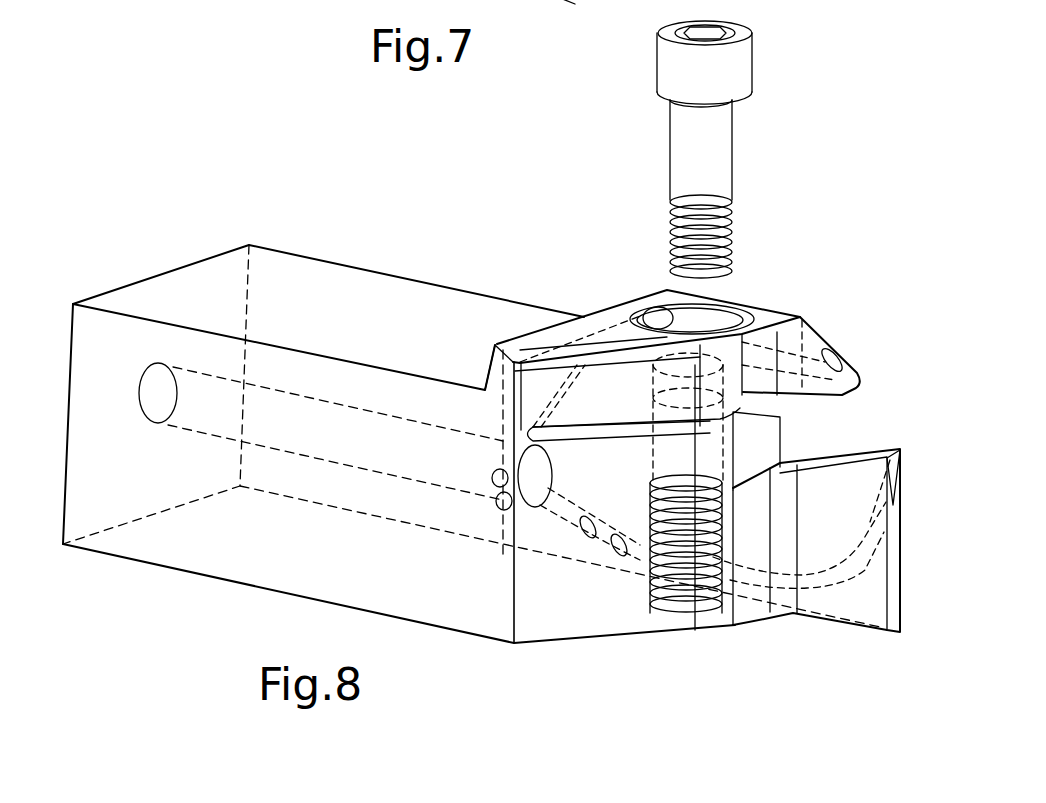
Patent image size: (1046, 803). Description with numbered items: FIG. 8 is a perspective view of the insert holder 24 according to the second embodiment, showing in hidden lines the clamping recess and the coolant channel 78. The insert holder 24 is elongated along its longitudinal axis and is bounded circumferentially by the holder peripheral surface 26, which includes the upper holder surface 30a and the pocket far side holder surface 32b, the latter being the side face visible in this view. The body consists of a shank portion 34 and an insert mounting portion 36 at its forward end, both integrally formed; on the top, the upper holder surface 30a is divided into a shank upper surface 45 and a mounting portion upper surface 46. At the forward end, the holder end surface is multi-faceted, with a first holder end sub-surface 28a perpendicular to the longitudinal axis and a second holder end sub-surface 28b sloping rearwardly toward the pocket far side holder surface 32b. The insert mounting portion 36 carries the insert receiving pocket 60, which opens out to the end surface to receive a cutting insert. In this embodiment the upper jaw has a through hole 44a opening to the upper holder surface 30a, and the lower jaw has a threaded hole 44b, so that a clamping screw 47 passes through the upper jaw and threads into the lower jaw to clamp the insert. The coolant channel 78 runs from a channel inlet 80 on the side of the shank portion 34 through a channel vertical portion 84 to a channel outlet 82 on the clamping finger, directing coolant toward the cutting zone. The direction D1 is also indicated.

The insert holder 24 is at (445, 423).
The holder peripheral surface 26 is at (328, 307).
The upper holder surface 30a is at (329, 313).
The pocket far side holder surface 32b is at (399, 502).
The shank portion 34 is at (462, 321).
The insert mounting portion 36 is at (701, 381).
The through hole 44a is at (655, 313).
The threaded hole 44b is at (699, 603).
The shank upper surface 45 is at (172, 295).
The mounting portion upper surface 46 is at (770, 308).
The clamping screw 47 is at (722, 74).
The insert receiving pocket 60 is at (840, 426).
The coolant channel 78 is at (320, 452).
The channel inlet 80 is at (155, 395).
The channel outlet 82 is at (840, 358).
The channel vertical portion 84 is at (508, 400).
The first holder end sub-surface 28a is at (748, 608).
The second holder end sub-surface 28b is at (552, 598).
The direction D1 is at (585, 8).